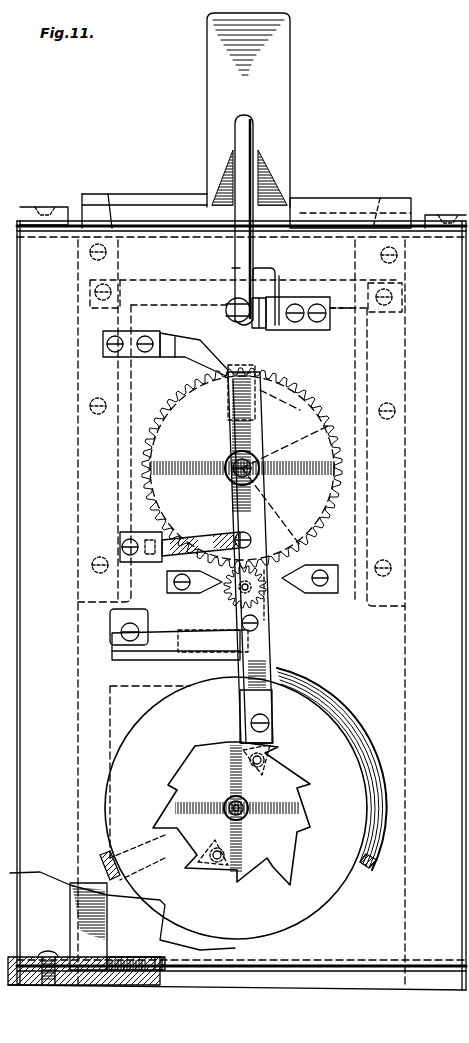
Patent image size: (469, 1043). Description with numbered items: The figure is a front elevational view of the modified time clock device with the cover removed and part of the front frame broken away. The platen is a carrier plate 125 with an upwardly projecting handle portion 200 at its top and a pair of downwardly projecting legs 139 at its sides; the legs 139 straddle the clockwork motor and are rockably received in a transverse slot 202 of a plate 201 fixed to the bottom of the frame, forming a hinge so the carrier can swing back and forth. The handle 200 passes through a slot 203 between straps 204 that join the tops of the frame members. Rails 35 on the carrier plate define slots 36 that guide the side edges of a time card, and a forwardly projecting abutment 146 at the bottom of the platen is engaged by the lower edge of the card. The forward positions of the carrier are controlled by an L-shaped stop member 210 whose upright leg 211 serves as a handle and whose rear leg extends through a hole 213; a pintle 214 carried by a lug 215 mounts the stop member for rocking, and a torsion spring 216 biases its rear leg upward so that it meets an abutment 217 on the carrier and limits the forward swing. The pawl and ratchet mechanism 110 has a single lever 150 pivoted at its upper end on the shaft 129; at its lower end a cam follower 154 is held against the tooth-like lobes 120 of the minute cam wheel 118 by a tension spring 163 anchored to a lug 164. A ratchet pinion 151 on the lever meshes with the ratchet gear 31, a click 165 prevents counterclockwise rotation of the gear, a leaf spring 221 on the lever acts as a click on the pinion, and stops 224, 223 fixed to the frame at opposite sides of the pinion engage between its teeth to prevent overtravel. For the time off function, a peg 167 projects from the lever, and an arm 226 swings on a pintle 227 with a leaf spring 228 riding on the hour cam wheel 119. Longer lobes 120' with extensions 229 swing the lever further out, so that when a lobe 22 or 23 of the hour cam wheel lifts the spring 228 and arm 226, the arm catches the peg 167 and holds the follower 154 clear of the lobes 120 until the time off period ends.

The handle portion 200 is at (262, 88).
The stop member 210 is at (237, 157).
The carrier plate 125 is at (330, 198).
The straps 204 is at (58, 207).
The slot 203 is at (418, 213).
The upright leg 211 is at (237, 252).
The torsion spring 216 is at (270, 272).
The pintle 214 is at (235, 298).
The hole 213 is at (240, 328).
The lug 215 is at (266, 330).
The abutment 217 is at (150, 280).
The click 165 is at (200, 345).
The ratchet gear 31 is at (340, 492).
The leaf spring 228 is at (310, 398).
The shaft 129 is at (240, 462).
The pintle 227 is at (262, 373).
The lever 150 is at (265, 646).
The cam follower 154 is at (240, 716).
The lug 164 is at (160, 538).
The tension spring 163 is at (185, 538).
The stop 224 is at (226, 596).
The right stop 223 is at (288, 588).
The ratchet pinion 151 is at (225, 608).
The abutment 146 is at (266, 588).
The leaf spring 221 is at (268, 604).
The peg 167 is at (268, 617).
The arm 226 is at (168, 654).
The rails 35 is at (98, 370).
The slots 36 is at (118, 442).
The hour cam wheel 119 is at (128, 742).
The minute cam wheel 118 is at (197, 770).
The lobes 120 is at (222, 807).
The lobes 120' is at (265, 813).
The extensions 229 is at (283, 760).
The lobe 23 is at (360, 738).
The pawl and ratchet mechanism 110 is at (325, 667).
The lobe 22 is at (100, 866).
The legs 139 is at (72, 920).
The plate 201 is at (60, 957).
The slot 202 is at (140, 940).